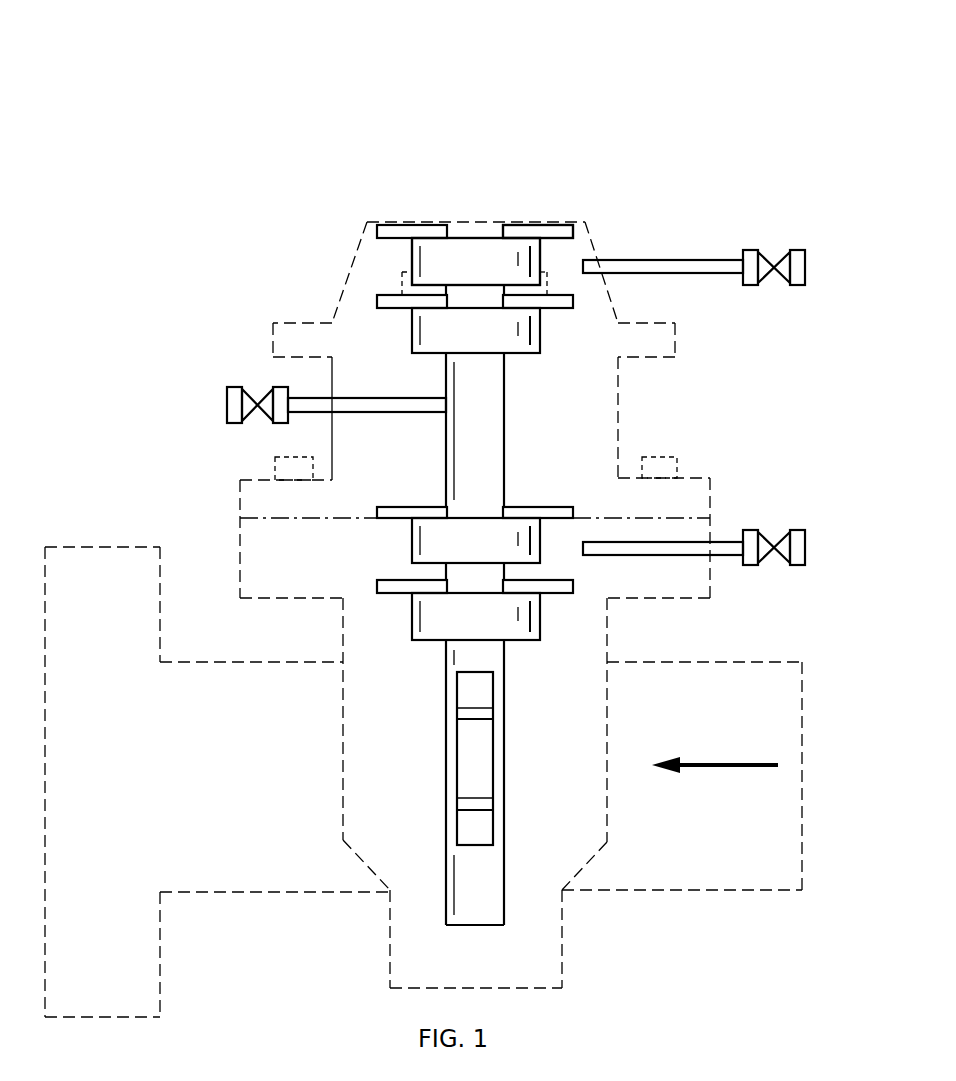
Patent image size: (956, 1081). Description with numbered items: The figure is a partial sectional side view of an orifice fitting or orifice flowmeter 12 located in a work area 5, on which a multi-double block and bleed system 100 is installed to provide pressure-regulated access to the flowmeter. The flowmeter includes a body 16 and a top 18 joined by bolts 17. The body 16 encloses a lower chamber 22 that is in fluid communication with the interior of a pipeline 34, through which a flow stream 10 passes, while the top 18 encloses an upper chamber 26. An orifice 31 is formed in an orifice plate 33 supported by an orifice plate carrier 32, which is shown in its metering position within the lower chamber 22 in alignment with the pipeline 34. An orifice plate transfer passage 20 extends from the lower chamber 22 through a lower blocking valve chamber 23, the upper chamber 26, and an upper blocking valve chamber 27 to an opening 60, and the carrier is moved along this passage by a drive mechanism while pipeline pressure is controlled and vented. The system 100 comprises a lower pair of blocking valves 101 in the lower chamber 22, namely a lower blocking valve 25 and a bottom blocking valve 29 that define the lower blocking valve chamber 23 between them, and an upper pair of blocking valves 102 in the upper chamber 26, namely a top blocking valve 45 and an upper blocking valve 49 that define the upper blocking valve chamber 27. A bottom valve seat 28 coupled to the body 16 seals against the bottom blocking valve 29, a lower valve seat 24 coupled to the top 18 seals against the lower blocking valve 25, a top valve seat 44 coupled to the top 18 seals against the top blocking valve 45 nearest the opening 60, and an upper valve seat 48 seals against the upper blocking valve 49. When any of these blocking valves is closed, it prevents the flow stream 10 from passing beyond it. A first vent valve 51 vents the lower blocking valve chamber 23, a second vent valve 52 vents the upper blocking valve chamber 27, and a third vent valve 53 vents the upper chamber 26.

The work area 5 is at (300, 33).
The multi-double block and bleed system 100 is at (632, 110).
The orifice flowmeter 12 is at (240, 147).
The opening 60 is at (463, 215).
The upper blocking valve chamber 27 is at (492, 290).
The top valve seat 44 is at (555, 222).
The second or upper pair of blocking valves 102 is at (668, 224).
The second vent valve 52 is at (806, 267).
The top blocking valve 45 is at (490, 275).
The upper blocking valve 49 is at (490, 343).
The upper valve seat 48 is at (392, 308).
The third vent valve 53 is at (227, 405).
The orifice plate transfer passage 20 is at (444, 450).
The upper chamber 26 is at (505, 438).
The lower valve seat 24 is at (538, 507).
The bolts 17 is at (677, 466).
The top 18 is at (712, 490).
The lower blocking valve chamber 23 is at (455, 577).
The lower blocking valve 25 is at (490, 553).
The bottom blocking valve 29 is at (490, 628).
The bottom valve seat 28 is at (552, 595).
The first vent valve 51 is at (806, 548).
The first or lower pair of blocking valves 101 is at (318, 615).
The pipeline 34 is at (262, 785).
The lower chamber 22 is at (505, 742).
The orifice 31 is at (474, 768).
The orifice plate 33 is at (487, 802).
The orifice plate carrier 32 is at (471, 836).
The flow stream 10 is at (725, 768).
The body 16 is at (563, 918).